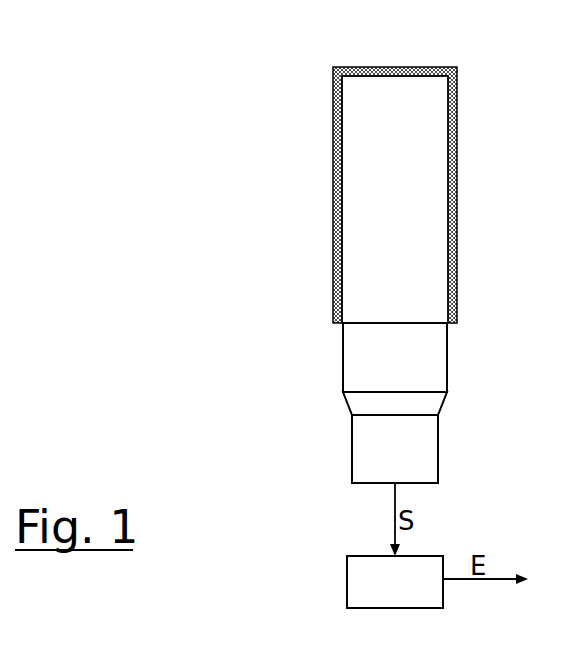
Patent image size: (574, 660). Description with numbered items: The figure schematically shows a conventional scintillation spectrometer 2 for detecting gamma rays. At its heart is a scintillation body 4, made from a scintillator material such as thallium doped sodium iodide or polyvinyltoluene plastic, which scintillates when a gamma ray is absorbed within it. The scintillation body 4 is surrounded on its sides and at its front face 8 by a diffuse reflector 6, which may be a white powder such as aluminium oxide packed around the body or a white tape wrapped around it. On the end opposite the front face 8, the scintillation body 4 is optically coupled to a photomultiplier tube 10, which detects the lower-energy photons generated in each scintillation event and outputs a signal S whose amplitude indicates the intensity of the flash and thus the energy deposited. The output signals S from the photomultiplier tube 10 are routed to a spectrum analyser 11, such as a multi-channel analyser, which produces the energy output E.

The scintillation spectrometer 2 is at (125, 140).
The scintillation body 4 is at (375, 115).
The diffuse reflector 6 is at (337, 216).
The front face 8 is at (395, 68).
The photomultiplier tube 10 is at (343, 378).
The spectrum analyser 11 is at (347, 592).